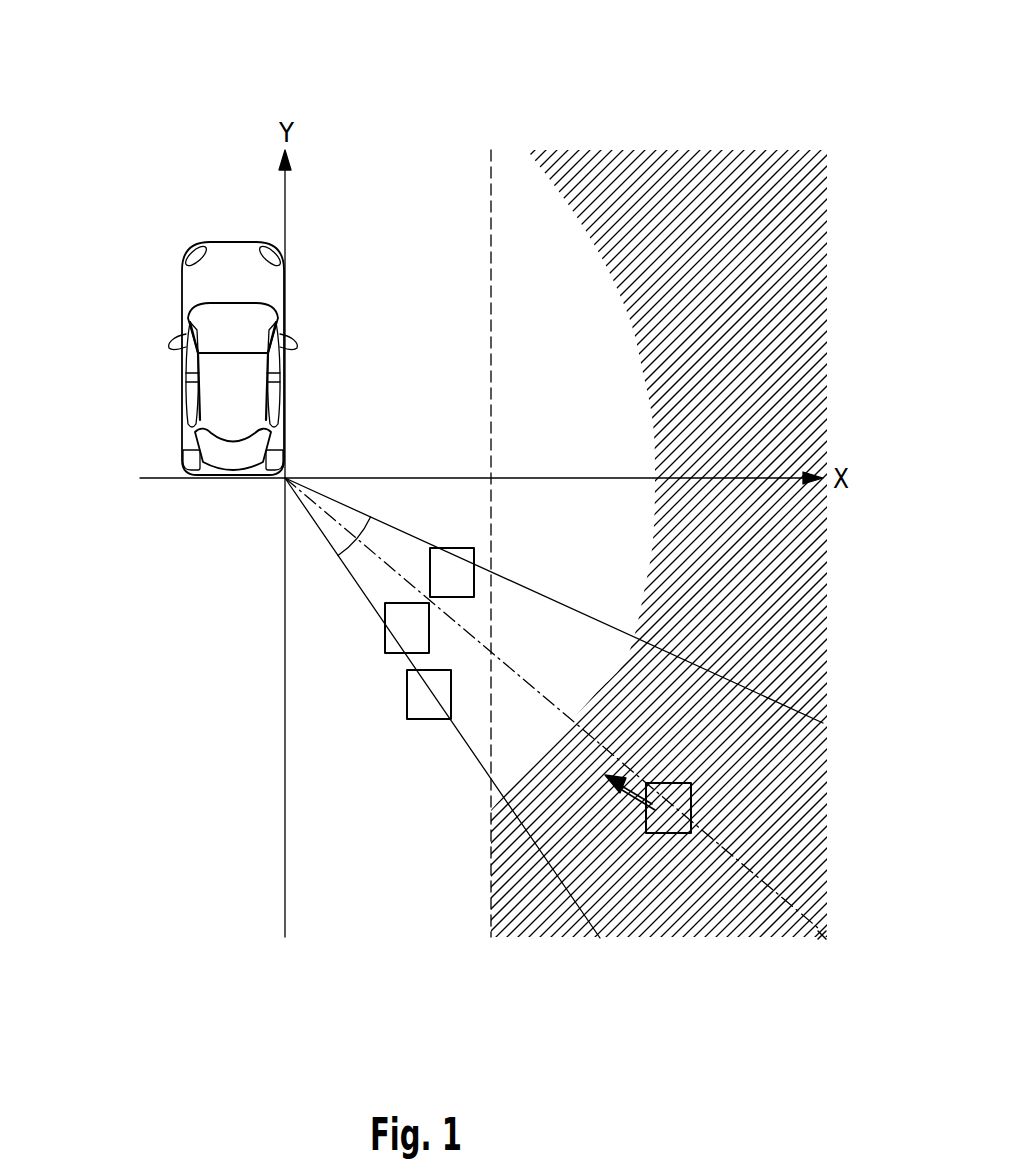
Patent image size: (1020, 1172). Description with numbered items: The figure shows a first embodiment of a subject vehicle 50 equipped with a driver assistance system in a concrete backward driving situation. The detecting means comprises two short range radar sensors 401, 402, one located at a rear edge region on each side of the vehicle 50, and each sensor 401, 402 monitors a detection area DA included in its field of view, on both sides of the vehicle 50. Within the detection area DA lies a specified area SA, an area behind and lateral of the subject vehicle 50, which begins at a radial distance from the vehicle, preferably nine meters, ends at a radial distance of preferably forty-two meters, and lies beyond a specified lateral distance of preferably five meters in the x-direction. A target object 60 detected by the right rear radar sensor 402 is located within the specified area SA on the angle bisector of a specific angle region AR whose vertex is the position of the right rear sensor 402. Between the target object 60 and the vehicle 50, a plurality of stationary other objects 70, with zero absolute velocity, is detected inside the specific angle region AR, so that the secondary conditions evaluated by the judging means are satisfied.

The vehicle 50 is at (229, 358).
The sensor 401 is at (193, 460).
The sensor 402 is at (283, 460).
The other objects 70 is at (451, 572).
The target object 60 is at (665, 812).
The detection area DA is at (394, 163).
The specified area SA is at (747, 193).
The specific angle region AR is at (350, 536).